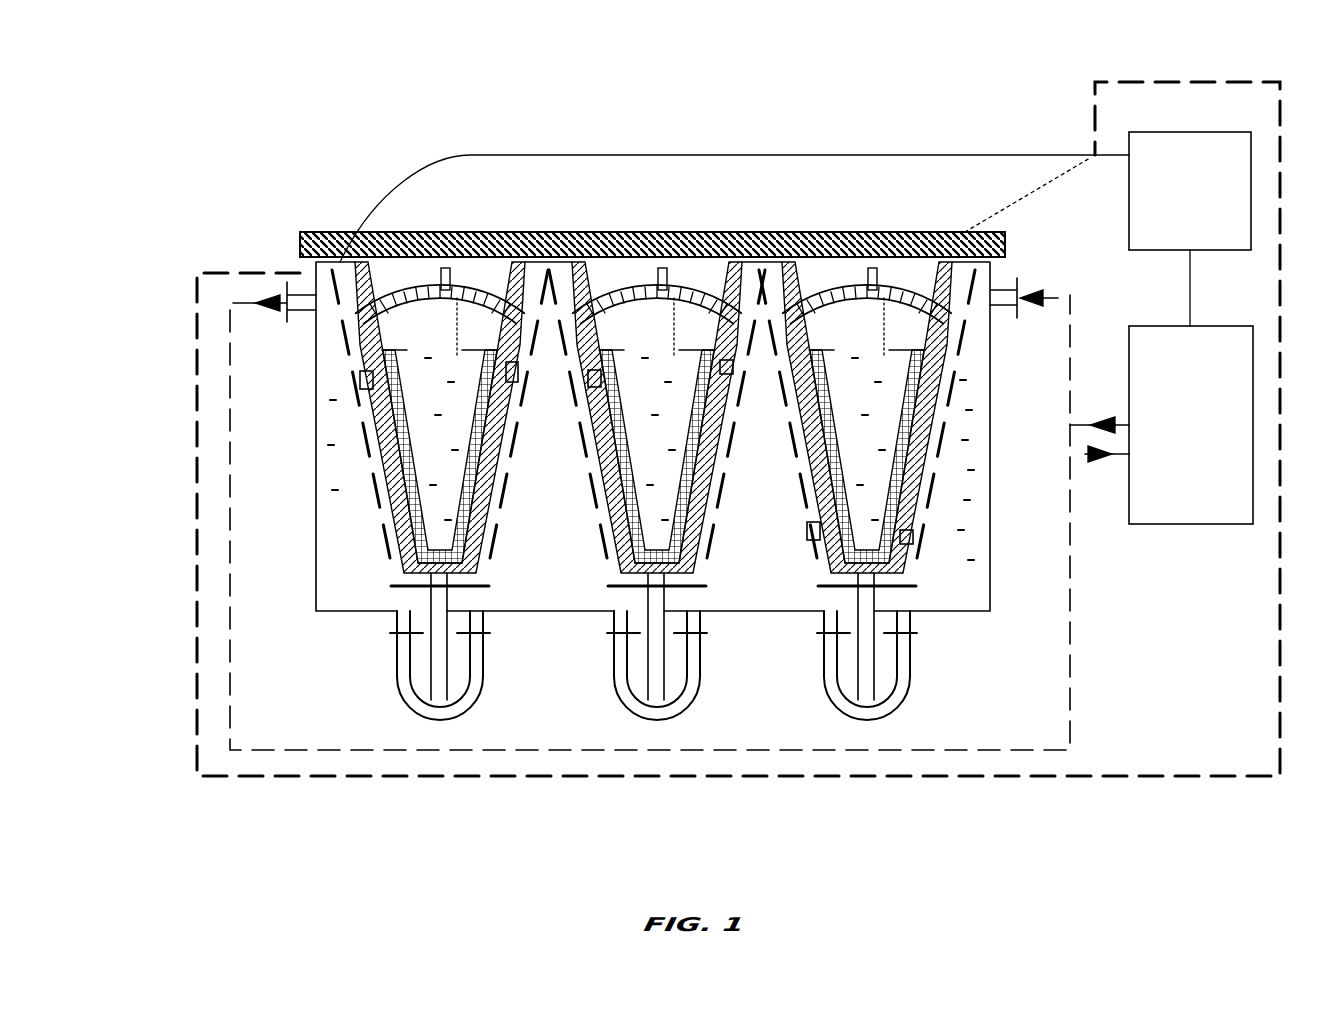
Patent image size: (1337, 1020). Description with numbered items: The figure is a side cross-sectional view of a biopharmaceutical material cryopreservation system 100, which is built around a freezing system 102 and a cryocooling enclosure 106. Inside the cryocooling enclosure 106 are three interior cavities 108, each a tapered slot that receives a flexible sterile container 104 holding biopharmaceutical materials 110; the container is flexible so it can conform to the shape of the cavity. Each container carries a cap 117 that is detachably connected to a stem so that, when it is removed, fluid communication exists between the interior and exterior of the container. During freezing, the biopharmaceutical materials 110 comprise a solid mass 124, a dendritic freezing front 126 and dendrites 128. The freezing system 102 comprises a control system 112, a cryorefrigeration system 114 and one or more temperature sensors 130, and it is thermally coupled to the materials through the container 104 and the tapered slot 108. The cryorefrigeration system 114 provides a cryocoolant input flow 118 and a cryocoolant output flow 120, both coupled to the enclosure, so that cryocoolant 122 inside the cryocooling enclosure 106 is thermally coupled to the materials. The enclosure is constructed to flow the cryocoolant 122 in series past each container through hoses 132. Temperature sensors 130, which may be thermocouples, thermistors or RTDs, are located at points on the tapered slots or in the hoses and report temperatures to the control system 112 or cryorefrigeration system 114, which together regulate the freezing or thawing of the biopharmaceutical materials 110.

The biopharmaceutical material cryopreservation system 100 is at (725, 474).
The freezing system 102 is at (1003, 778).
The flexible sterile container 104 is at (365, 340).
The cryocooling enclosure 106 is at (316, 440).
The interior cavity 108 is at (372, 440).
The biopharmaceutical materials 110 is at (470, 358).
The control system 112 is at (1183, 132).
The cryorefrigeration system 114 is at (1253, 397).
The cap 117 is at (447, 268).
The cryocoolant input flow 118 is at (1058, 298).
The cryocoolant output flow 120 is at (1078, 560).
The cryocoolant 122 is at (967, 590).
The solid mass 124 is at (352, 400).
The dendritic freezing front 126 is at (440, 600).
The dendrites 128 is at (396, 440).
The temperature sensor 130 is at (360, 378).
The hoses 132 is at (444, 722).